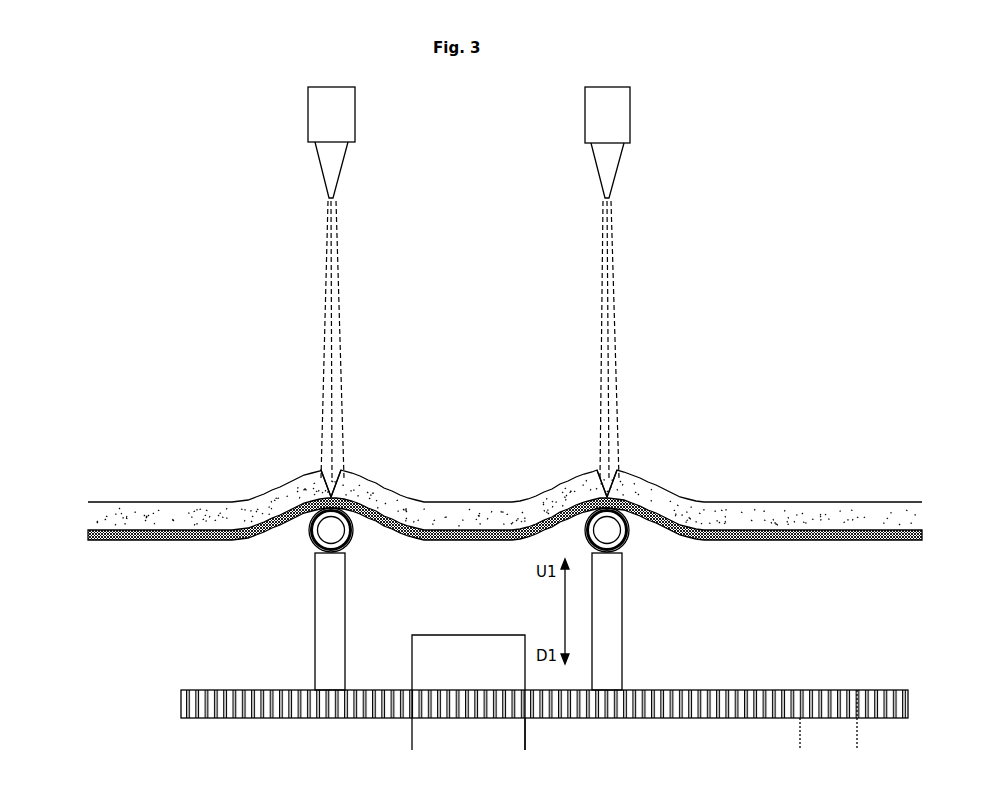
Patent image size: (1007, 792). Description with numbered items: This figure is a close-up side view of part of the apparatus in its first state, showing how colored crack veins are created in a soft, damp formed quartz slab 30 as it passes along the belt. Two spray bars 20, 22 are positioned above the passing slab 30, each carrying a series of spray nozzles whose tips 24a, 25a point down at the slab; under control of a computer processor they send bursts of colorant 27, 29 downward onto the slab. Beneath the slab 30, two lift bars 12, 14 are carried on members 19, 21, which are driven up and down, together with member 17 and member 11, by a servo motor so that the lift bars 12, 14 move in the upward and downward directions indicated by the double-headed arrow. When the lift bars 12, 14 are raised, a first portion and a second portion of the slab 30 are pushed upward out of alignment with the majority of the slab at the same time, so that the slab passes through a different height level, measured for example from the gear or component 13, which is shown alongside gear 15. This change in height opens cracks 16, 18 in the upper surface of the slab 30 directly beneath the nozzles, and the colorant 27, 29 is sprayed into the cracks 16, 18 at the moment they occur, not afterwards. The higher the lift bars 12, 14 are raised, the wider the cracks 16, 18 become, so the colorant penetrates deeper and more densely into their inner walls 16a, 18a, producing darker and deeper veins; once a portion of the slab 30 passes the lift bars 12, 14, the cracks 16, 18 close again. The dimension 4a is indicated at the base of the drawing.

The spray bar 20 is at (325, 132).
The spray bar 22 is at (622, 125).
The first nozzle tip 24a is at (340, 175).
The second nozzle tip 25a is at (612, 178).
The colorant 27 is at (323, 314).
The colorant 29 is at (615, 322).
The formed quartz slab 30 is at (753, 513).
The crack 16 is at (330, 494).
The inner wall of crack 16a is at (335, 494).
The crack 18 is at (606, 494).
The inner wall of crack 18a is at (610, 494).
The lift bar 12 is at (307, 543).
The lift bar 14 is at (638, 547).
The member 19 is at (328, 627).
The member 21 is at (612, 620).
The member 17 is at (455, 648).
The gear 13 is at (722, 688).
The gear 15 is at (858, 690).
The member 11 is at (515, 737).
The distance 4a is at (820, 739).